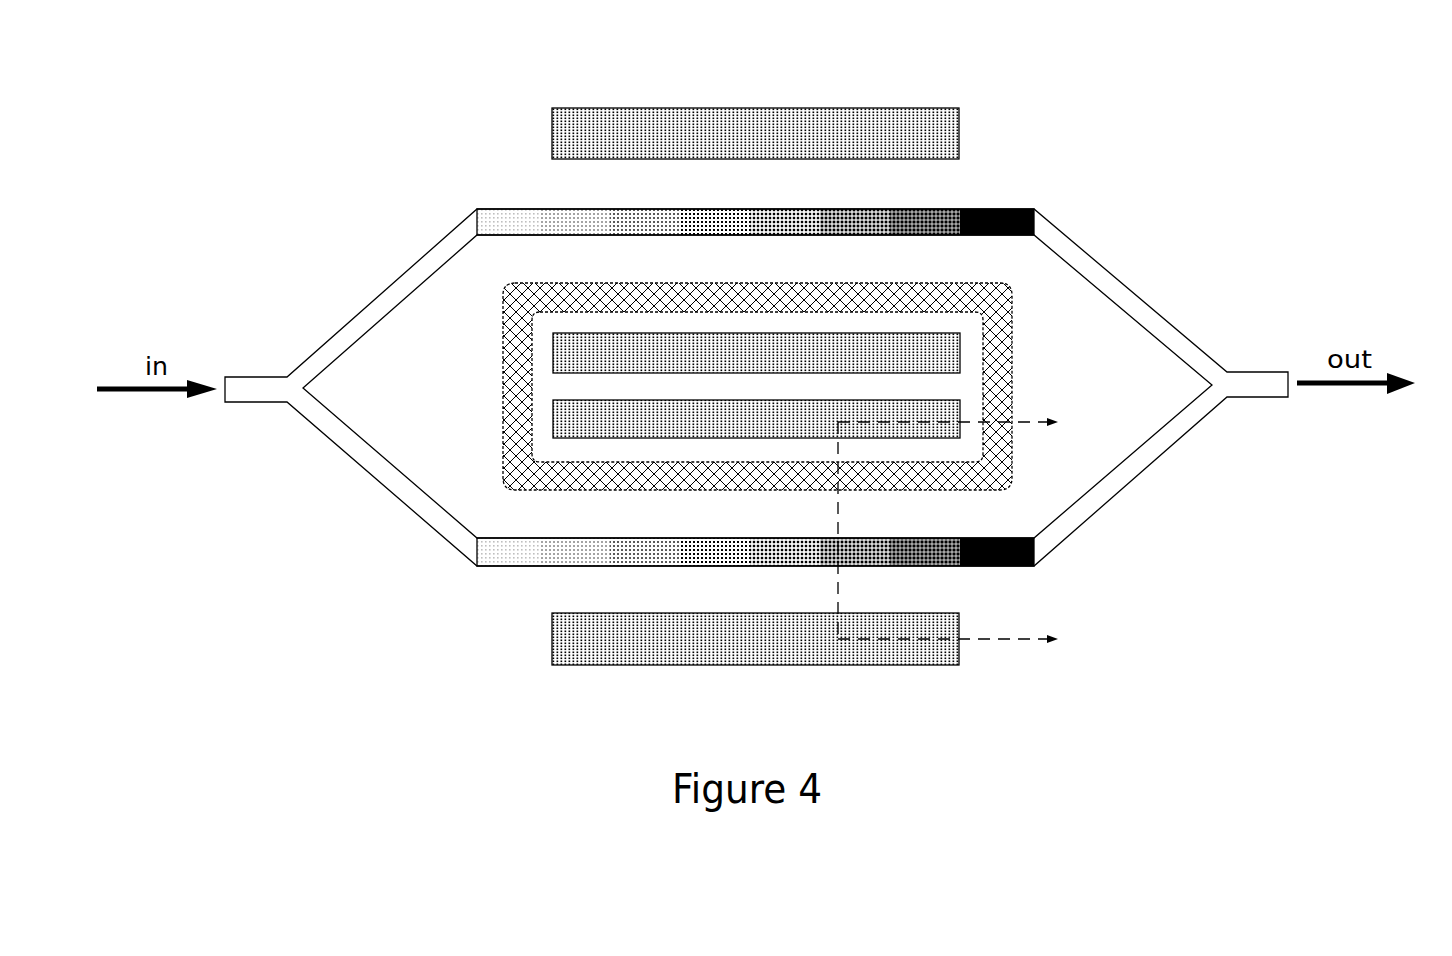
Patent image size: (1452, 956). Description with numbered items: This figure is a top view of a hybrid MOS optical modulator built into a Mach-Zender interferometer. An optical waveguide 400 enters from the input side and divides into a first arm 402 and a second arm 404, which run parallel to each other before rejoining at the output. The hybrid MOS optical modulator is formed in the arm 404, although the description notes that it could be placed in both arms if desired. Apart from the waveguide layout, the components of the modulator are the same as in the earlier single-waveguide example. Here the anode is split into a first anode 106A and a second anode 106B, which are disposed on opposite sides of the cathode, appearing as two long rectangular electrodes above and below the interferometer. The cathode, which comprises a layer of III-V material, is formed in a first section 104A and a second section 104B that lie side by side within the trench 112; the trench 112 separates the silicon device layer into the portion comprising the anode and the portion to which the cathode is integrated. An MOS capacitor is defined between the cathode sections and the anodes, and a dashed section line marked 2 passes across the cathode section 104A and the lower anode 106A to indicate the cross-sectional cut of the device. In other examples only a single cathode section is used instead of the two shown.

The optical waveguide 400 is at (1260, 397).
The first arm 402 is at (1008, 209).
The second arm 404 is at (1007, 566).
The second anode 106B is at (887, 108).
The first anode 106A is at (625, 665).
The trench 112 is at (937, 285).
The second cathode section 104B is at (608, 363).
The first cathode section 104A is at (608, 430).
The section line 2- 2 is at (965, 528).